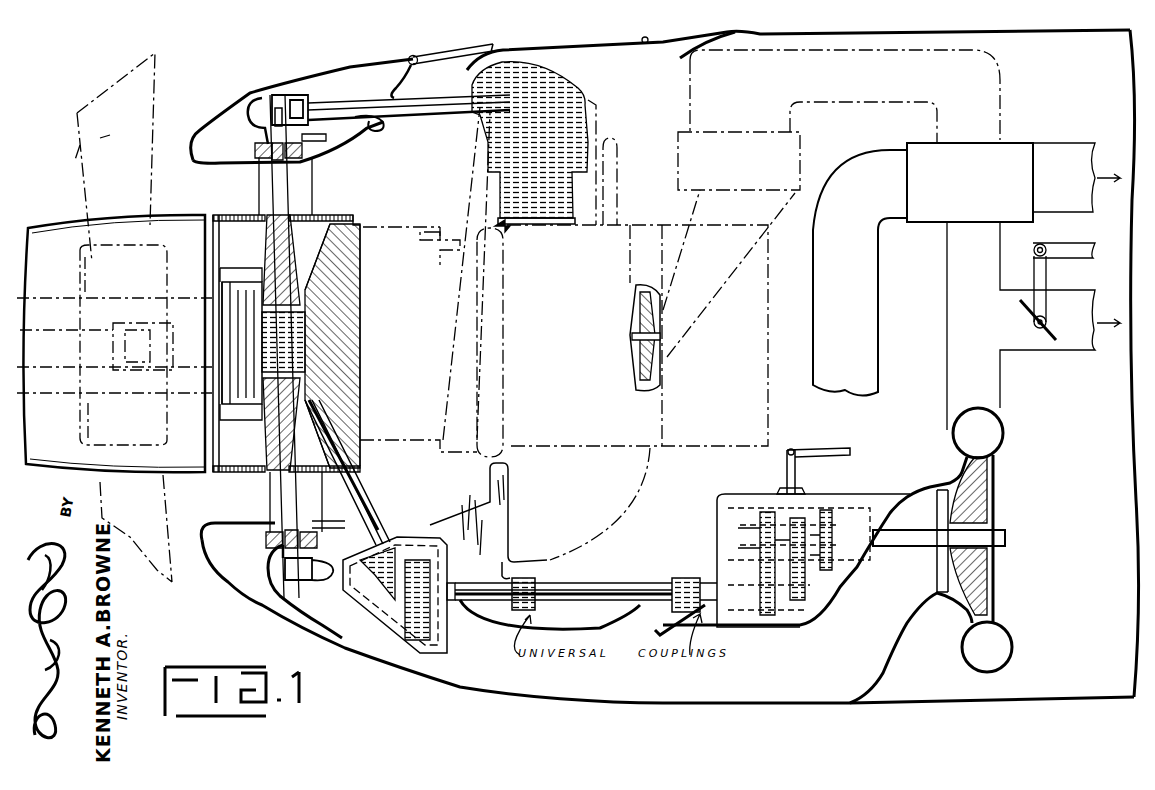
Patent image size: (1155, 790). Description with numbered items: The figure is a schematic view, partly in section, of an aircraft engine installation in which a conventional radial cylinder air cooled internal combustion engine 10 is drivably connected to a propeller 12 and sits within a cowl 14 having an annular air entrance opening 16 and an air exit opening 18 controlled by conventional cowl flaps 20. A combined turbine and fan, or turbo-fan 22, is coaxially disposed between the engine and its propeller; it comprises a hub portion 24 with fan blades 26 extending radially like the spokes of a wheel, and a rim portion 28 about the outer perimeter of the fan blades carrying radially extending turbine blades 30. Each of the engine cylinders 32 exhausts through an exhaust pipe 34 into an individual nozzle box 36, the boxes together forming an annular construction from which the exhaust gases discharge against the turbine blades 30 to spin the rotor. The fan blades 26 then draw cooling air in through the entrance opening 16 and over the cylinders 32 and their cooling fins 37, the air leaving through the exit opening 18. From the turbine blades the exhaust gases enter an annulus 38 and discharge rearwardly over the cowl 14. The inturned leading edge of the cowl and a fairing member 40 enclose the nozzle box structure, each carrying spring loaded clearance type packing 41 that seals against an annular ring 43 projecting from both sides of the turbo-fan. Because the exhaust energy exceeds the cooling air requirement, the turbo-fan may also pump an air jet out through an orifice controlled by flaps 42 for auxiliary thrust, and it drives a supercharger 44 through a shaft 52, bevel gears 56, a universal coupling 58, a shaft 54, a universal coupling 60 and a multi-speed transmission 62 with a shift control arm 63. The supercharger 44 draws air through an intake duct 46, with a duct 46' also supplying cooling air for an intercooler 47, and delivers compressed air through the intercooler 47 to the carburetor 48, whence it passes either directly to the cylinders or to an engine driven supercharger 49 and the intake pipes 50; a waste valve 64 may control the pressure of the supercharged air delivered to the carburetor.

The internal combustion engine 10 is at (459, 190).
The propeller 12 is at (80, 152).
The cowl 14 is at (578, 42).
The annular air entrance opening 16 is at (203, 170).
The air exit opening 18 is at (672, 50).
The cowl flaps 20 is at (695, 32).
The turbo-fan 22 is at (304, 199).
The hub portion 24 is at (272, 256).
The fan blades 26 is at (288, 174).
The rim portion 28 is at (302, 138).
The turbine blades 30 is at (256, 100).
The engine cylinders 32 is at (585, 222).
The exhaust pipe 34 is at (365, 100).
The nozzle box 36 is at (288, 90).
The cooling fins 37 is at (565, 190).
The annulus 38 is at (276, 86).
The fairing member 40 is at (373, 133).
The spring loaded clearance type packing 41 is at (256, 150).
The flaps 42 is at (440, 50).
The annular ring 43 is at (262, 178).
The supercharger 44 is at (988, 565).
The intake duct 46 is at (817, 593).
The duct 46' is at (821, 370).
The intercooler 47 is at (1023, 178).
The carburetor 48 is at (782, 160).
The engine driven supercharger 49 is at (662, 310).
The intake pipes 50 is at (628, 128).
The shaft 52 is at (368, 498).
The shaft 54 is at (597, 595).
The bevel gears 56 is at (450, 645).
The universal coupling 58 is at (533, 608).
The universal coupling 60 is at (690, 578).
The multi-speed transmission 62 is at (820, 505).
The shift control arm 63 is at (818, 450).
The waste valve 64 is at (1050, 345).